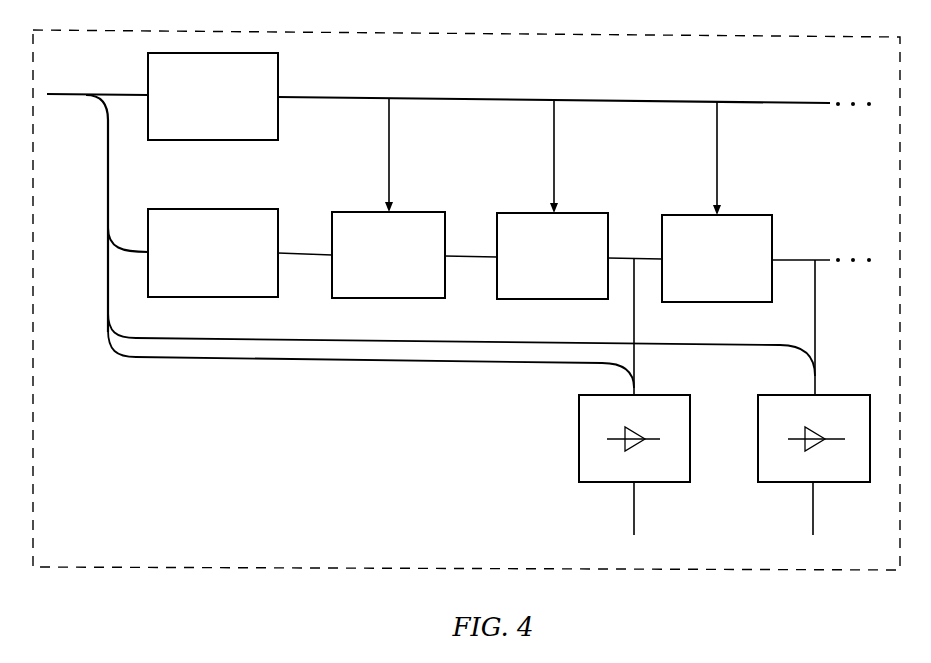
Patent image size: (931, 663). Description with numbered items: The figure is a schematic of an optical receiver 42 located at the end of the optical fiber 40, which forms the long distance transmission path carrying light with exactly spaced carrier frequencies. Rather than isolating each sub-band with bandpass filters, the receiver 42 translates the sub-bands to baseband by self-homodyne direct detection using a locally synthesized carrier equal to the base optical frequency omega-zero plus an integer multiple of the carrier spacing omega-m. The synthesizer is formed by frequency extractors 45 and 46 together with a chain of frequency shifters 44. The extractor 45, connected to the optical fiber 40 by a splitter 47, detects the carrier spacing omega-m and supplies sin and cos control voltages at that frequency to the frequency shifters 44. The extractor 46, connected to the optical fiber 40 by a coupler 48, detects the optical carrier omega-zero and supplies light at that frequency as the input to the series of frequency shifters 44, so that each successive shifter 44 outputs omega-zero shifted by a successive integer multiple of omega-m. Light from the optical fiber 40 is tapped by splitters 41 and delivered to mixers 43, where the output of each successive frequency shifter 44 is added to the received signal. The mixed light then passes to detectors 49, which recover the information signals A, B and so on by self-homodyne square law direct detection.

The optical fiber 40 is at (60, 92).
The splitters 41 is at (108, 303).
The optical receiver 42 is at (212, 31).
The mixers 43 is at (636, 382).
The frequency shifters 44 is at (424, 212).
The frequency extractor 45 is at (278, 80).
The frequency extractor 46 is at (278, 209).
The splitter 47 is at (96, 101).
The coupler 48 is at (108, 231).
The detectors 49 is at (580, 482).